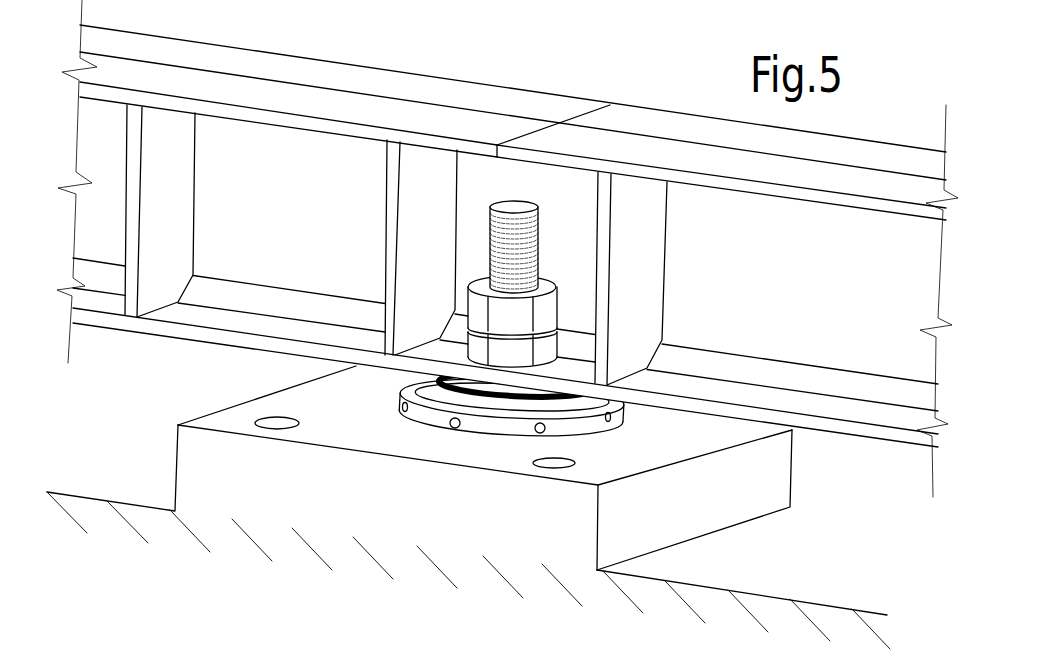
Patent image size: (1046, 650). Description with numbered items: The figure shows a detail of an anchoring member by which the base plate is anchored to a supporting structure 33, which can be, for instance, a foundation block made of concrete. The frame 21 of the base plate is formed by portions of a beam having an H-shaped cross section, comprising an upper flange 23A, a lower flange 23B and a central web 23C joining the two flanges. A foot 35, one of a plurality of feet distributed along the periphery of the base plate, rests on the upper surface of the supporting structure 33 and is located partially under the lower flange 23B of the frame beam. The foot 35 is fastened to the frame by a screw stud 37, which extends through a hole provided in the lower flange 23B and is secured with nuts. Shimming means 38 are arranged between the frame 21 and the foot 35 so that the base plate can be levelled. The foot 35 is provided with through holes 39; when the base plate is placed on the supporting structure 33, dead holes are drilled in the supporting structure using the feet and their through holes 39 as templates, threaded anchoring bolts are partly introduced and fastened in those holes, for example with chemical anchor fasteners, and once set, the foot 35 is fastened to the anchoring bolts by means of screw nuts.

The frame 21 is at (314, 184).
The upper flange 23A is at (402, 117).
The lower flange 23B is at (217, 317).
The central web 23C is at (233, 218).
The supporting structure 33 is at (753, 573).
The foot 35 is at (777, 483).
The screw stud 37 is at (540, 219).
The shimming means 38 is at (417, 410).
The through holes 39 is at (280, 422).